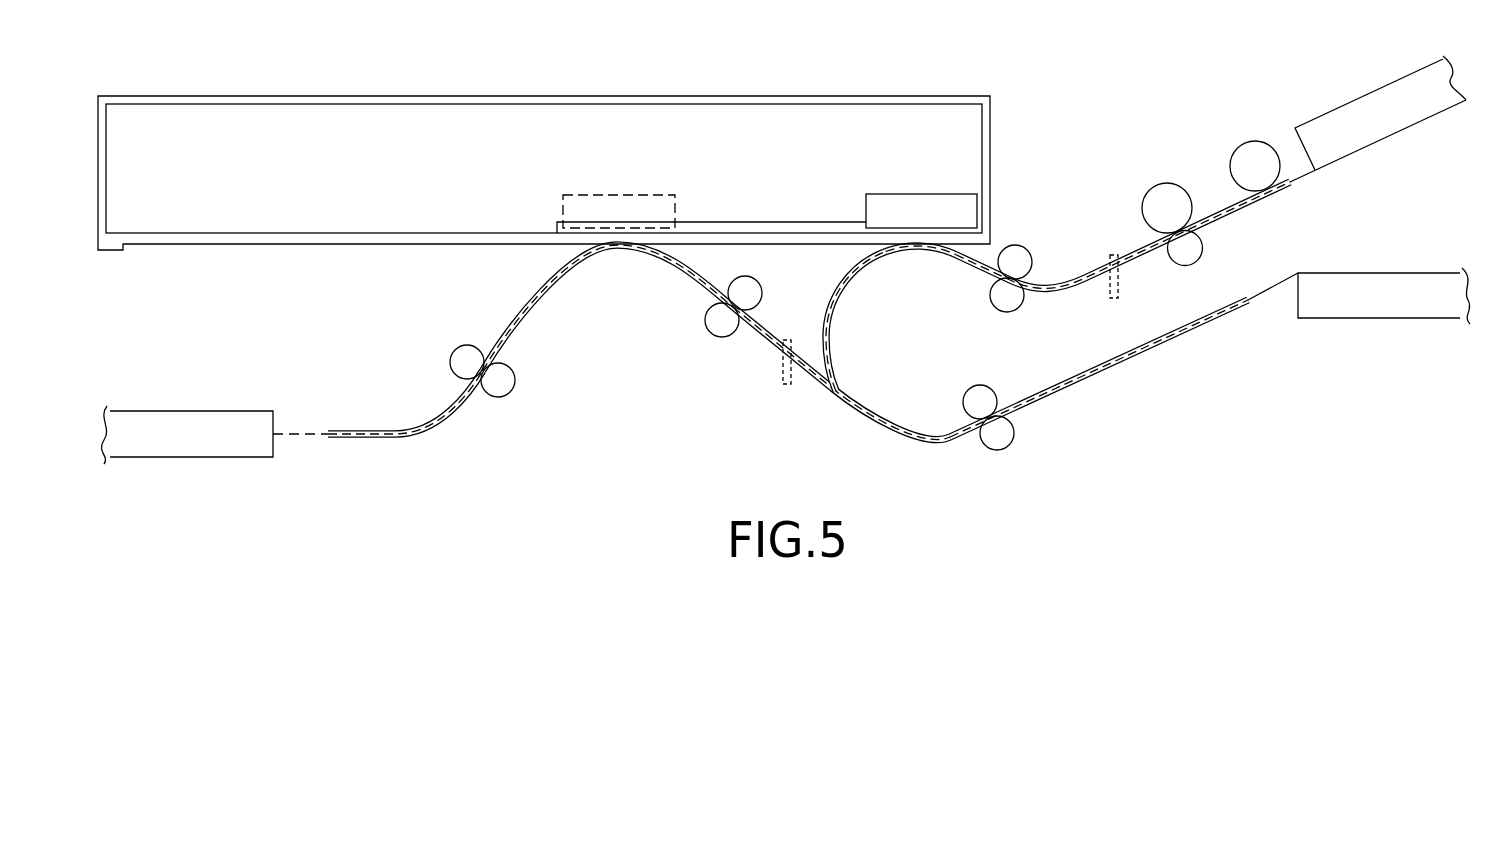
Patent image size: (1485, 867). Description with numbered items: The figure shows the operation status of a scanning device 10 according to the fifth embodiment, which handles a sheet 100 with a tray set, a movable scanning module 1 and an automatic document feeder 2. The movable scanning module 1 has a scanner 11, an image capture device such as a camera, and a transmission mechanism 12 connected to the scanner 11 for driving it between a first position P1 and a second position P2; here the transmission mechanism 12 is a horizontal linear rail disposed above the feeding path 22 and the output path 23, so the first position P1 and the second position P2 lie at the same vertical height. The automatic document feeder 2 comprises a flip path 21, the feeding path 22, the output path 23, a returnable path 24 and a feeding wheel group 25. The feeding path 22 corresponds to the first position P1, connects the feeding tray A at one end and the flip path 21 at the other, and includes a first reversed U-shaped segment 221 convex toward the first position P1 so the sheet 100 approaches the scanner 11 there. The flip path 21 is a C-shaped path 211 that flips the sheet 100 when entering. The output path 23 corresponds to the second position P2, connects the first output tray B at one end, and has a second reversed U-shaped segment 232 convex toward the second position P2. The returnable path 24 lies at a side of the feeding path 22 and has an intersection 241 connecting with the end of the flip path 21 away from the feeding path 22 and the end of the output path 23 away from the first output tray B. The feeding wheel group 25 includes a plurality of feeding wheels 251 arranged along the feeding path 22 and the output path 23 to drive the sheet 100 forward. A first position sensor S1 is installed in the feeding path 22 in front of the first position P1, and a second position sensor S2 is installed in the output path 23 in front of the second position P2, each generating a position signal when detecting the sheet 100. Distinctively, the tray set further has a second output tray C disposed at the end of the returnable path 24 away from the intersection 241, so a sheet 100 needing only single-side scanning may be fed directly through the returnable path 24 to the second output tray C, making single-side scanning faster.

The scanning device 10 is at (800, 37).
The movable scanning module 1 is at (767, 168).
The scanner 11 is at (872, 209).
The transmission mechanism 12 is at (783, 228).
The first position P1 is at (891, 169).
The second position P2 is at (611, 183).
The automatic document feeder 2 is at (809, 277).
The flip path 21 is at (901, 318).
The C-shaped path 211 is at (830, 348).
The first reversed U-shaped segment 221 is at (920, 248).
The feeding path 22 is at (1090, 257).
The output path 23 is at (580, 339).
The second reversed U-shaped segment 232 is at (617, 250).
The returnable path 24 is at (1032, 398).
The intersection 241 is at (832, 398).
The feeding wheel group 25 is at (865, 275).
The feeding wheel 251 is at (498, 388).
The first position sensor S1 is at (1120, 276).
The second position sensor S2 is at (790, 386).
The sheet 100 is at (1273, 283).
The feeding tray A is at (1372, 103).
The first output tray B is at (191, 445).
The second output tray C is at (1373, 305).